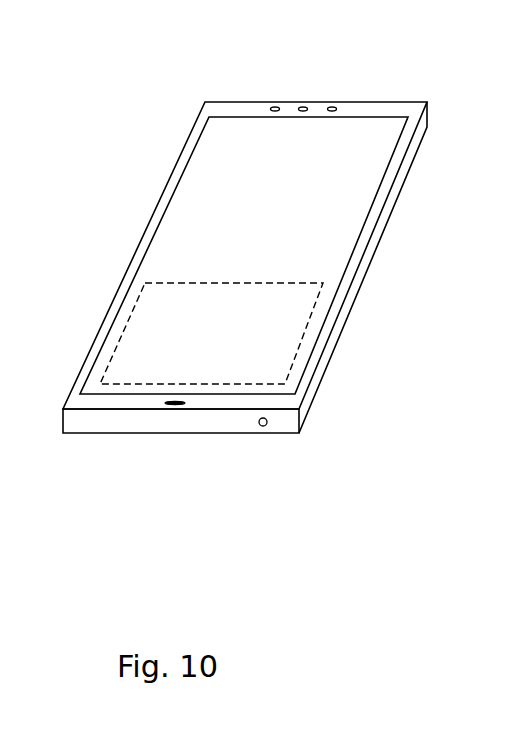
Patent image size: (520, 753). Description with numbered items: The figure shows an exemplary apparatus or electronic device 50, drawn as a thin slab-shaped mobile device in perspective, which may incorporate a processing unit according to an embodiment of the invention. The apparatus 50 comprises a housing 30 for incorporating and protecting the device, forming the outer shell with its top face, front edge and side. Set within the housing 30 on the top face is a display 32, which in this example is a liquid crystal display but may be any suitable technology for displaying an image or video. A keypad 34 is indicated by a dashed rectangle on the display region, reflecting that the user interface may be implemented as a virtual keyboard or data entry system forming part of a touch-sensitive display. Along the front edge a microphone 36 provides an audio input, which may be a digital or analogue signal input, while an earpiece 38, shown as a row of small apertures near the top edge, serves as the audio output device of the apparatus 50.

The housing 30 is at (218, 101).
The display 32 is at (350, 202).
The keypad 34 is at (290, 348).
The microphone 36 is at (180, 406).
The earpiece 38 is at (298, 103).
The apparatus 50 is at (448, 72).